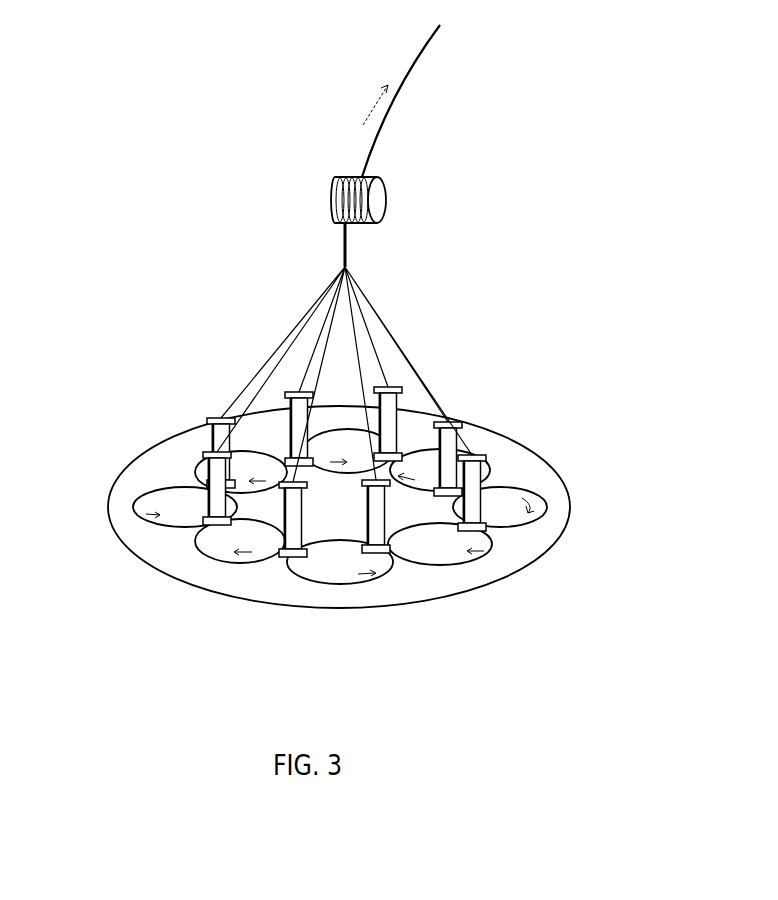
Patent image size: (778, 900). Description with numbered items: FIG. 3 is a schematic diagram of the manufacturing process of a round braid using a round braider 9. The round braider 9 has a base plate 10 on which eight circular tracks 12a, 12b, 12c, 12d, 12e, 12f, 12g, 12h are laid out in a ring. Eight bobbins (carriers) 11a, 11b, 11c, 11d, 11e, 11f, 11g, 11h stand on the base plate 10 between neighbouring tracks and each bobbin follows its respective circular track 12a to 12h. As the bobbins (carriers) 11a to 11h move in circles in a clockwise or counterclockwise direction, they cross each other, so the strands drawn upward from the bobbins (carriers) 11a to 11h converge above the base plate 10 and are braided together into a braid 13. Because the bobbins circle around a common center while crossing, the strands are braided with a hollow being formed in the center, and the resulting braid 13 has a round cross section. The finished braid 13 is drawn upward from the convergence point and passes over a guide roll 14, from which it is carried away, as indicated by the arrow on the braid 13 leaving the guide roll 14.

The round braider 9 is at (160, 230).
The base plate 10 is at (560, 465).
The bobbin (carrier) 11a is at (210, 524).
The bobbin (carrier) 11b is at (284, 556).
The bobbin (carrier) 11c is at (376, 555).
The bobbin (carrier) 11d is at (483, 503).
The bobbin (carrier) 11e is at (463, 440).
The bobbin (carrier) 11f is at (400, 390).
The bobbin (carrier) 11g is at (296, 390).
The bobbin (carrier) 11h is at (218, 416).
The circular track 12a is at (220, 565).
The circular track 12b is at (322, 583).
The circular track 12c is at (455, 567).
The circular track 12d is at (547, 503).
The circular track 12e is at (495, 472).
The circular track 12f is at (344, 430).
The circular track 12g is at (197, 470).
The circular track 12h is at (130, 510).
The braid 13 is at (400, 100).
The guide roll 14 is at (385, 200).